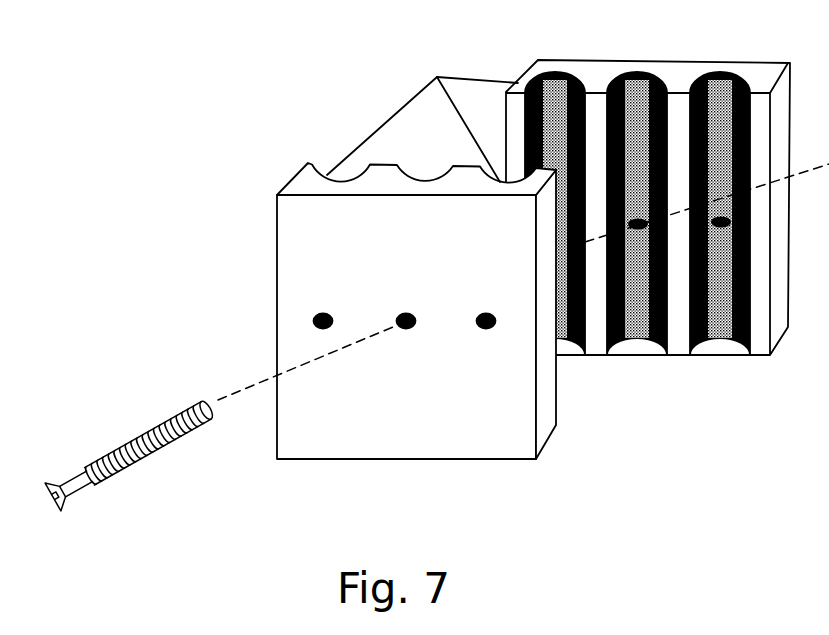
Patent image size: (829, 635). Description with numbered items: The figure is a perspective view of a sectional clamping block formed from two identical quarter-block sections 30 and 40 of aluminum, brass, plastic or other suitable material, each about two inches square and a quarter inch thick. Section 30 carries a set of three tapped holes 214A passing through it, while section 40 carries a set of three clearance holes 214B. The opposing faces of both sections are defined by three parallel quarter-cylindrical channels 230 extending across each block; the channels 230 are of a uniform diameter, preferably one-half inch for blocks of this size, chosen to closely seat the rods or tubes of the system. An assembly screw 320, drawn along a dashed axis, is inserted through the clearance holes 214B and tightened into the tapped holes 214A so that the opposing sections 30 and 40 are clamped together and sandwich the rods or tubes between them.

The sectional unit 30 is at (413, 247).
The sectional unit 40 is at (401, 99).
The quarter-cylindrical channels 230 is at (392, 98).
The tapped holes 214A is at (406, 321).
The clearance holes 214B is at (723, 228).
The assembly screw 320 is at (85, 468).